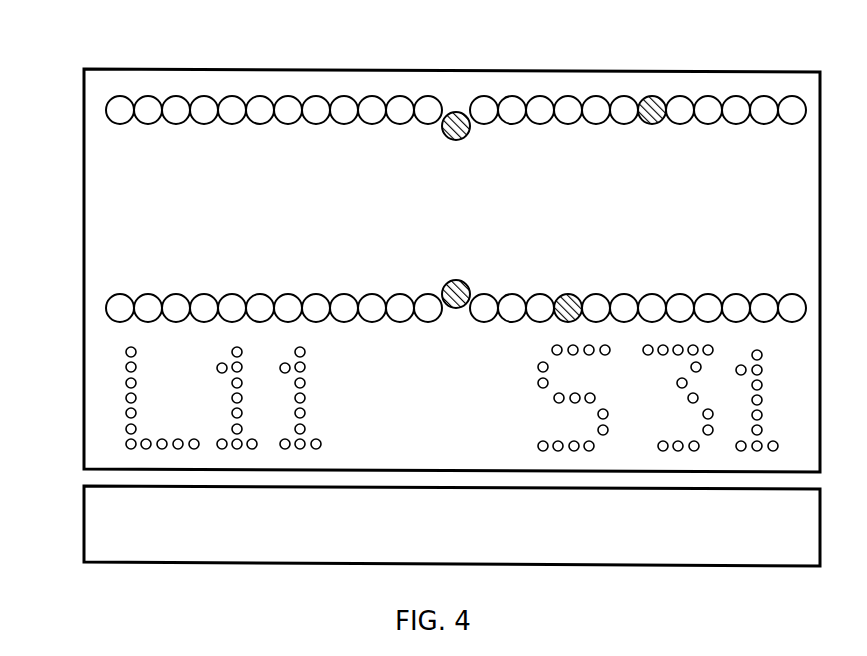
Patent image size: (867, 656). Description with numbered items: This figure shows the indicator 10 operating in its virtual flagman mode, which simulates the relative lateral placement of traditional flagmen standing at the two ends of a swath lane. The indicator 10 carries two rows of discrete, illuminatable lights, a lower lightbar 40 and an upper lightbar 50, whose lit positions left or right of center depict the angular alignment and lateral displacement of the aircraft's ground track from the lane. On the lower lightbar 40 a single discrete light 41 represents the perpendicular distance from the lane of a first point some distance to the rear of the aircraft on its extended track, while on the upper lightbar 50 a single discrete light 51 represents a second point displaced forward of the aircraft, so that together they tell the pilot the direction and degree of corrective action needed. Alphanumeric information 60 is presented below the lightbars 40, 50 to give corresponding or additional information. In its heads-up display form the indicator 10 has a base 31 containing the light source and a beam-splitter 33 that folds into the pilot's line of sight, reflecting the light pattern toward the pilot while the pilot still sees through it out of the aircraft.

The indicator 10 is at (709, 42).
The base 31 is at (84, 516).
The beam-splitter 33 is at (84, 464).
The lower lightbar 40 is at (79, 283).
The discrete light 41 is at (570, 295).
The upper lightbar 50 is at (79, 86).
The discrete light 51 is at (652, 96).
The alphanumeric information 60 is at (79, 345).